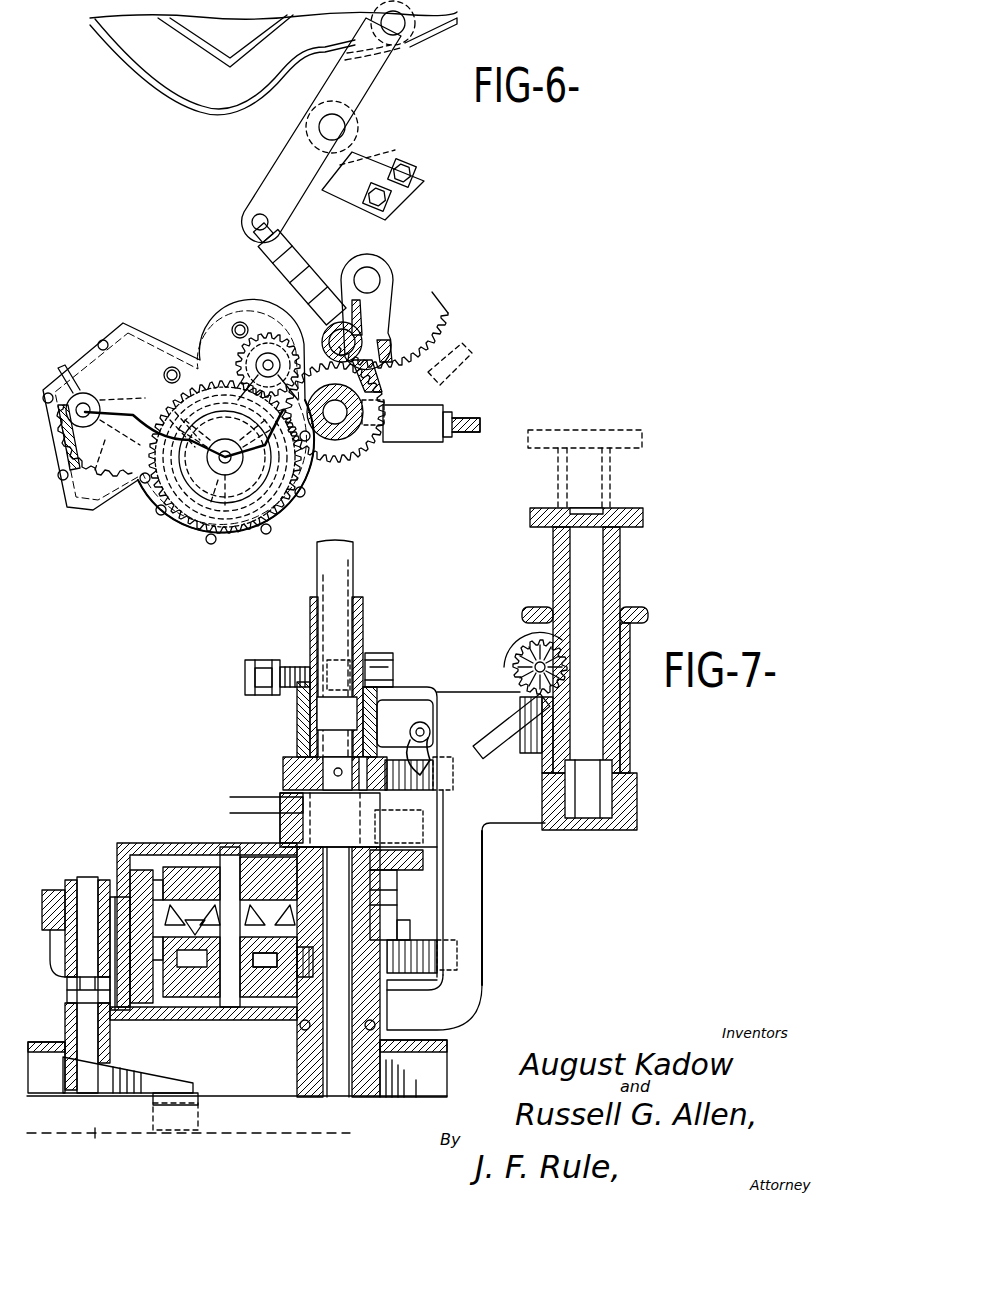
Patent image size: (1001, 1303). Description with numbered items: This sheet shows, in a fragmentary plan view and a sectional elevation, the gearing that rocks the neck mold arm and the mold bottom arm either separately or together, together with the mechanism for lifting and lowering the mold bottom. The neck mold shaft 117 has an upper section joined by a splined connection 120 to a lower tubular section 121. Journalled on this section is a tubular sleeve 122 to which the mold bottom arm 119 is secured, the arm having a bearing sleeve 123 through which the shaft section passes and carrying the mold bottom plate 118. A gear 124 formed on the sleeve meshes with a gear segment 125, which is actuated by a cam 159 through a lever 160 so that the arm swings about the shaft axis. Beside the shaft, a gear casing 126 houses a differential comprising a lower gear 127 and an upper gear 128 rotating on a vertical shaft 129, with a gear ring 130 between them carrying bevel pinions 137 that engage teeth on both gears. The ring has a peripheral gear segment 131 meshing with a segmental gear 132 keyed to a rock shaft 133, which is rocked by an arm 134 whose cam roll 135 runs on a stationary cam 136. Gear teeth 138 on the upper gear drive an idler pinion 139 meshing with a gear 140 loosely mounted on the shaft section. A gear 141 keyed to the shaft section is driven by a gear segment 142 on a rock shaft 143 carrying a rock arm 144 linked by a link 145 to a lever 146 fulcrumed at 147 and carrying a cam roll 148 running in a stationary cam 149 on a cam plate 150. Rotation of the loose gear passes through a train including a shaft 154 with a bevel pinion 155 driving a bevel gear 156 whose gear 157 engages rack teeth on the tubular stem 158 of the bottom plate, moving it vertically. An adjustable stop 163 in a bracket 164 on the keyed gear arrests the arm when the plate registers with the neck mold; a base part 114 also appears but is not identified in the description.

In FIG. 7, the base block 114 is at (447, 1057).
In FIG. 7, the neck mold shaft 117 is at (345, 553).
In FIG. 7, the mold bottom plate 118 is at (644, 438).
In FIG. 6, the mold bottom arm 119 is at (466, 432).
In FIG. 7, the mold bottom arm 119 is at (484, 862).
In FIG. 7, the splined connection 120 is at (310, 592).
In FIG. 6, the lower tubular section 121 is at (346, 434).
In FIG. 7, the lower tubular section 121 is at (315, 707).
In FIG. 7, the tubular shaft or sleeve 122 is at (384, 897).
In FIG. 7, the bearing sleeve 123 is at (297, 742).
In FIG. 6, the gear 124 is at (384, 392).
In FIG. 7, the gear 124 is at (400, 940).
In FIG. 6, the gear segment 125 is at (410, 365).
In FIG. 7, the gear segment 125 is at (420, 958).
In FIG. 6, the gear casing 126 is at (140, 341).
In FIG. 7, the gear casing 126 is at (140, 845).
In FIG. 7, the lower gear 127 is at (335, 940).
In FIG. 7, the upper gear 128 is at (190, 867).
In FIG. 6, the vertical shaft 129 is at (210, 535).
In FIG. 7, the vertical shaft 129 is at (226, 847).
In FIG. 6, the gear ring 130 is at (186, 536).
In FIG. 7, the gear ring 130 is at (152, 888).
In FIG. 6, the gear segment 131 is at (182, 520).
In FIG. 7, the gear segment 131 is at (160, 925).
In FIG. 6, the segmental gear 132 is at (62, 490).
In FIG. 7, the segmental gear 132 is at (98, 890).
In FIG. 6, the rock shaft 133 is at (62, 392).
In FIG. 7, the rock shaft 133 is at (79, 880).
In FIG. 6, the arm 134 is at (52, 466).
In FIG. 7, the arm 134 is at (128, 1070).
In FIG. 7, the cam roll 135 is at (198, 1115).
In FIG. 7, the stationary cam 136 is at (97, 1134).
In FIG. 6, the bevel pinions 137 is at (176, 410).
In FIG. 7, the bevel pinions 137 is at (150, 812).
In FIG. 6, the gear teeth 138 is at (298, 478).
In FIG. 7, the gear teeth 138 is at (360, 972).
In FIG. 6, the idler pinion 139 is at (252, 330).
In FIG. 7, the idler pinion 139 is at (270, 857).
In FIG. 6, the gear 140 is at (352, 440).
In FIG. 7, the gear 140 is at (399, 826).
In FIG. 7, the gear 141 is at (287, 770).
In FIG. 6, the gear segment 142 is at (428, 325).
In FIG. 7, the gear segment 142 is at (438, 800).
In FIG. 6, the rock shaft 143 is at (381, 280).
In FIG. 7, the rock shaft 143 is at (378, 655).
In FIG. 6, the rock arm 144 is at (396, 300).
In FIG. 7, the rock arm 144 is at (376, 672).
In FIG. 6, the link 145 is at (305, 272).
In FIG. 7, the link 145 is at (297, 667).
In FIG. 6, the lever 146 is at (296, 198).
In FIG. 7, the lever 146 is at (255, 660).
In FIG. 6, the fulcrum 147 is at (346, 127).
In FIG. 6, the cam roll 148 is at (440, 32).
In FIG. 6, the stationary cam 149 is at (212, 103).
In FIG. 6, the cam plate 150 is at (232, 40).
In FIG. 7, the shaft 154 is at (495, 725).
In FIG. 7, the bevel pinion 155 is at (514, 682).
In FIG. 7, the bevel gear 156 is at (513, 660).
In FIG. 7, the gear 157 is at (532, 648).
In FIG. 7, the tubular stem 158 is at (553, 590).
In FIG. 7, the cam 159 is at (330, 820).
In FIG. 7, the lever 160 is at (484, 880).
In FIG. 7, the adjustable stop 163 is at (431, 732).
In FIG. 7, the bracket 164 is at (425, 755).